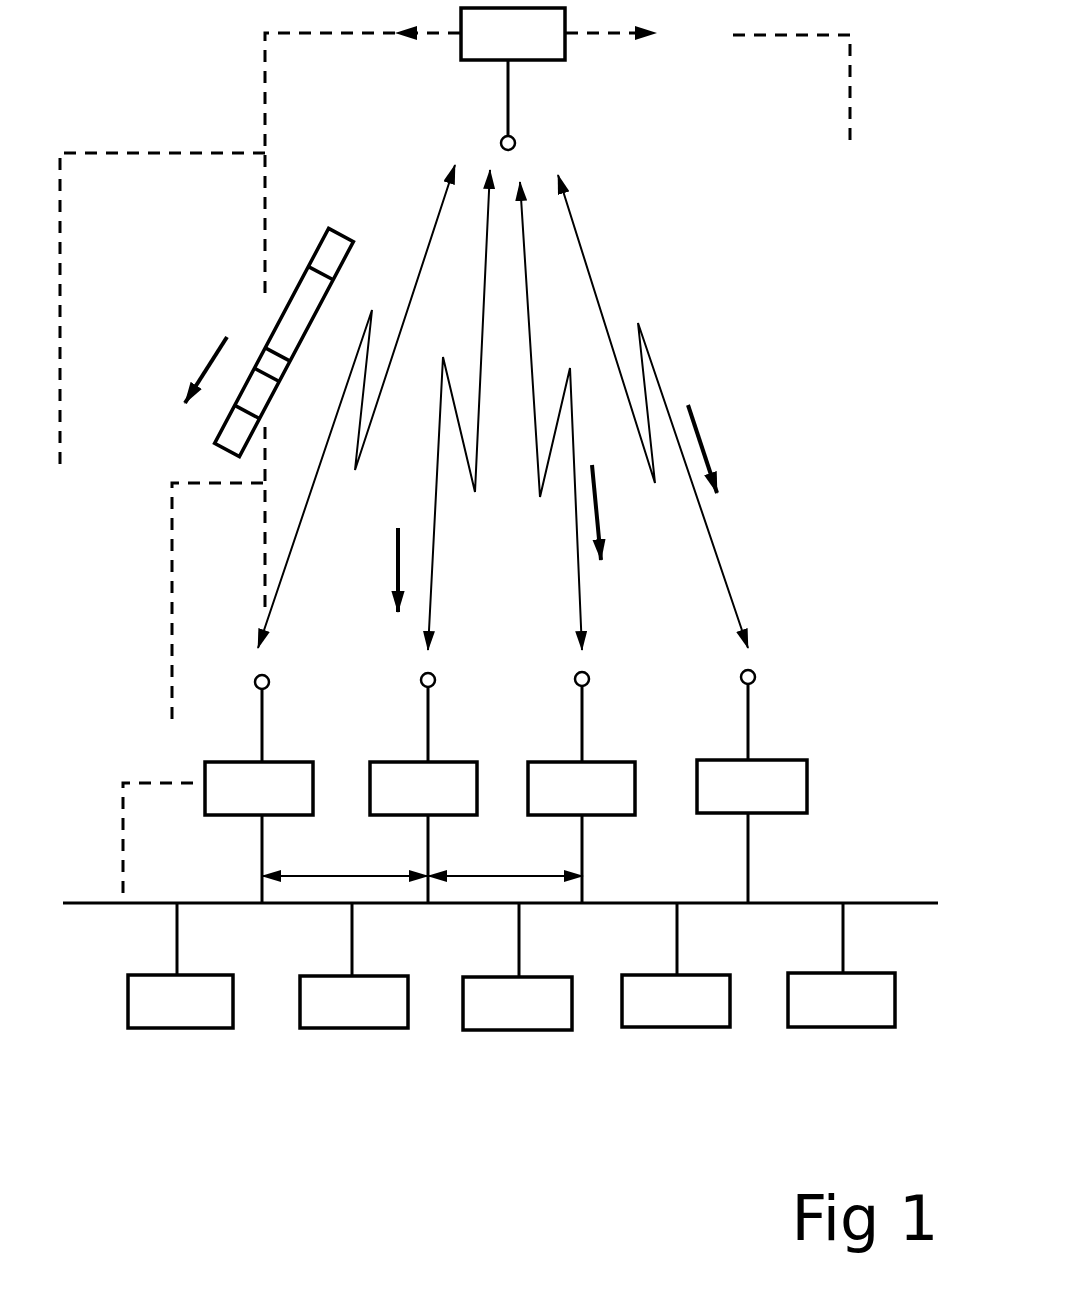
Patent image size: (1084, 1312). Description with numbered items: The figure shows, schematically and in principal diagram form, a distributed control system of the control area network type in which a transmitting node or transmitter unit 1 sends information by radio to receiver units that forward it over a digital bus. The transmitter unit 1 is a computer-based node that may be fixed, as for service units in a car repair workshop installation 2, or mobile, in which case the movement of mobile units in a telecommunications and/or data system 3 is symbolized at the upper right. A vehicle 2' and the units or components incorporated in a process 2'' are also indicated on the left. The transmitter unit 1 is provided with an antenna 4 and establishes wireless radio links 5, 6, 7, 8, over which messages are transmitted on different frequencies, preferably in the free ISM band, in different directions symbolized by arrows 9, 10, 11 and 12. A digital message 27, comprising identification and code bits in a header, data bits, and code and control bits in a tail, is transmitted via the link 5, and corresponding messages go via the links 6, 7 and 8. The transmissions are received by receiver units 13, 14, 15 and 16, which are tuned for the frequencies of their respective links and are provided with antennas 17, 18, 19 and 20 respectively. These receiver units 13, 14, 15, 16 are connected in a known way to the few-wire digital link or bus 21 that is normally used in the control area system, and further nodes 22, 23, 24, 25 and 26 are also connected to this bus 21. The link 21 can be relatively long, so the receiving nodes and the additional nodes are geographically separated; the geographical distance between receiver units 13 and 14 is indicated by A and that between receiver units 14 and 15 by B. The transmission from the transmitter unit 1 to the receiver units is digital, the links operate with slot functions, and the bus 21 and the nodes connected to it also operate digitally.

The transmitting node or transmitter unit 1 is at (547, 47).
The car repair workshop installation 2 is at (227, 320).
The vehicle 2' is at (183, 605).
The units or components incorporated in a process 2'' is at (117, 837).
The telecommunications and/or data system 3 is at (823, 132).
The antenna 4 is at (510, 108).
The radio link 5 is at (418, 265).
The radio link 6 is at (478, 352).
The radio link 7 is at (530, 347).
The radio link 8 is at (590, 265).
The transmission direction 9 is at (210, 362).
The transmission direction 10 is at (393, 567).
The transmission direction 11 is at (598, 530).
The transmission direction 12 is at (702, 440).
The receiver unit 13 is at (287, 773).
The receiver unit 14 is at (463, 777).
The receiver unit 15 is at (620, 773).
The receiver unit 16 is at (785, 775).
The antenna 17 is at (267, 710).
The antenna 18 is at (428, 720).
The antenna 19 is at (585, 710).
The antenna 20 is at (750, 712).
The few-wire link or bus 21 is at (498, 932).
The node 22 is at (207, 1007).
The node 23 is at (378, 1010).
The node 24 is at (545, 1015).
The node 25 is at (707, 1013).
The node 26 is at (862, 1015).
The message 27 is at (278, 339).
The geographical distance A is at (345, 853).
The geographical distance B is at (505, 853).